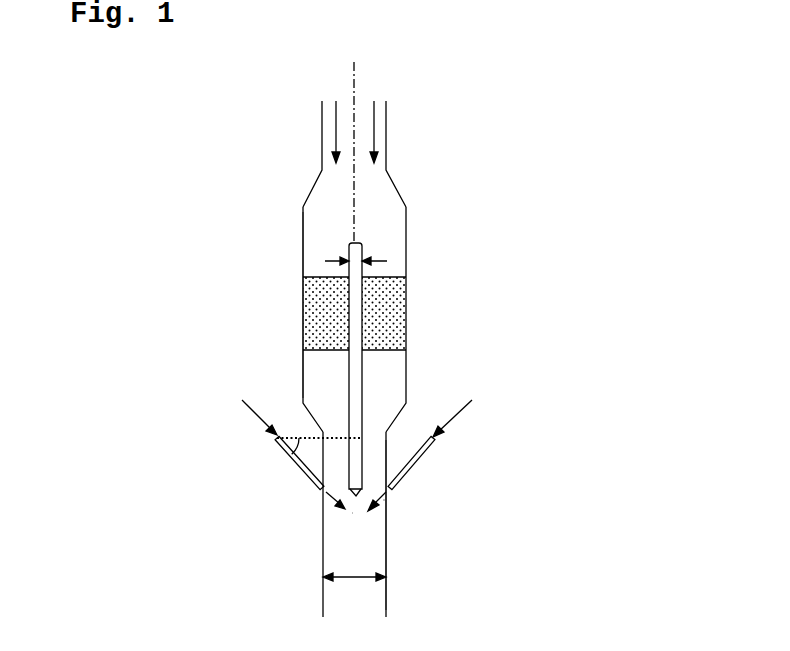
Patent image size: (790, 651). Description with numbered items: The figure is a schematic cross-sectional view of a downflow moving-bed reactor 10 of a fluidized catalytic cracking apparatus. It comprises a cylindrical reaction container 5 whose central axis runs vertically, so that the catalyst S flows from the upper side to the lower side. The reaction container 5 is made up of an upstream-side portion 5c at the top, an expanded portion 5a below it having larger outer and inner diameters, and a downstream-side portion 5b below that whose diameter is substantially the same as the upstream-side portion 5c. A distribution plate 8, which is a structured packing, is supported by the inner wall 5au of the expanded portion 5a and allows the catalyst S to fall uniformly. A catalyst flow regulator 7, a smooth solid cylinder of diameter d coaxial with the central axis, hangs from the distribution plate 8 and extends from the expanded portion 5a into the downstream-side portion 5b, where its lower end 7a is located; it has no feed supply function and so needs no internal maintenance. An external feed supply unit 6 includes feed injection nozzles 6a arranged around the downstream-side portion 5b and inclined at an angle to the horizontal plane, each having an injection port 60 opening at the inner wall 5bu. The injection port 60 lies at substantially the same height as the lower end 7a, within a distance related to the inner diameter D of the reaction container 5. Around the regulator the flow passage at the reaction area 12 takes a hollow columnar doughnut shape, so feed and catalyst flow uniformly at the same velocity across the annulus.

The downflow moving-bed reactor 10 is at (493, 98).
The reaction container 5 is at (472, 200).
The upstream-side portion 5c is at (387, 149).
The expanded portion 5a is at (406, 240).
The inner wall of the expanded portion 5au is at (393, 298).
The downstream-side portion 5b is at (386, 528).
The inner wall of the downstream-side portion 5bu is at (386, 553).
The distribution plate 8 is at (313, 320).
The catalyst flow regulator 7 is at (356, 368).
The lower end of the catalyst flow regulator 7a is at (362, 497).
The external feed supply unit 6 is at (505, 452).
The feed injection nozzle 6a is at (300, 463).
The injection port 60 is at (388, 488).
The reaction area 12 is at (352, 513).
The catalyst S is at (338, 125).
The diameter of the catalyst flow regulator d is at (338, 260).
The inner diameter of the reaction container D is at (354, 591).